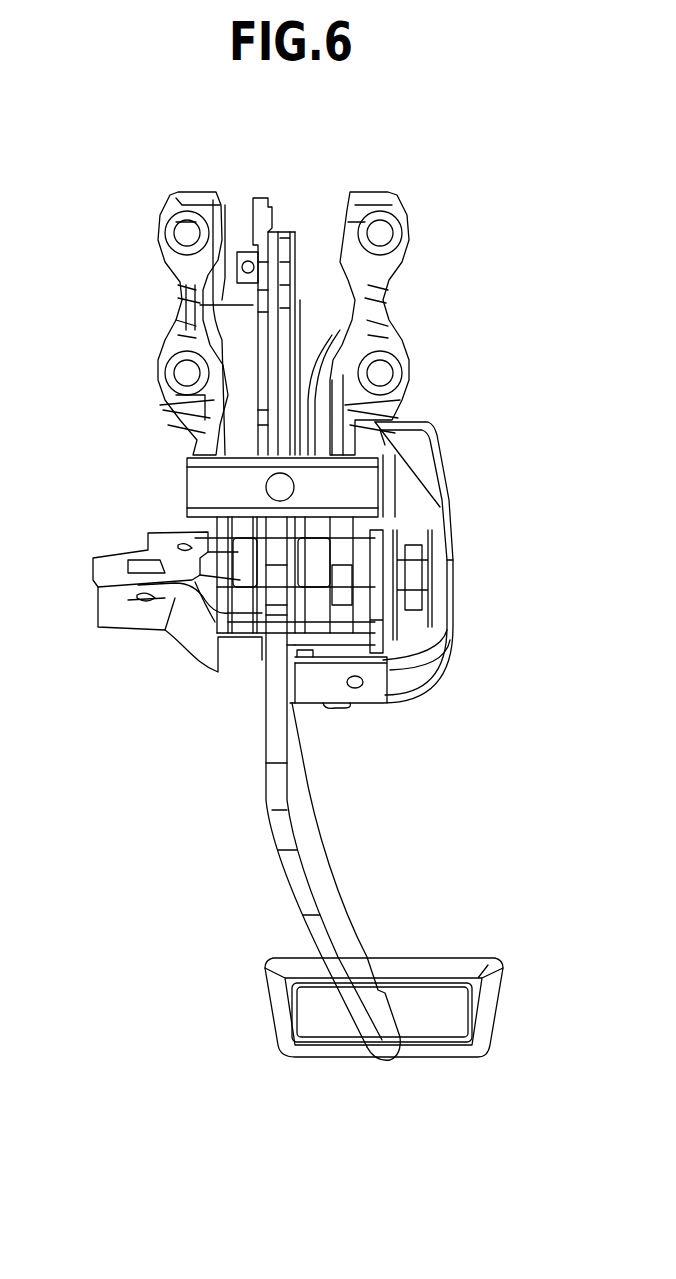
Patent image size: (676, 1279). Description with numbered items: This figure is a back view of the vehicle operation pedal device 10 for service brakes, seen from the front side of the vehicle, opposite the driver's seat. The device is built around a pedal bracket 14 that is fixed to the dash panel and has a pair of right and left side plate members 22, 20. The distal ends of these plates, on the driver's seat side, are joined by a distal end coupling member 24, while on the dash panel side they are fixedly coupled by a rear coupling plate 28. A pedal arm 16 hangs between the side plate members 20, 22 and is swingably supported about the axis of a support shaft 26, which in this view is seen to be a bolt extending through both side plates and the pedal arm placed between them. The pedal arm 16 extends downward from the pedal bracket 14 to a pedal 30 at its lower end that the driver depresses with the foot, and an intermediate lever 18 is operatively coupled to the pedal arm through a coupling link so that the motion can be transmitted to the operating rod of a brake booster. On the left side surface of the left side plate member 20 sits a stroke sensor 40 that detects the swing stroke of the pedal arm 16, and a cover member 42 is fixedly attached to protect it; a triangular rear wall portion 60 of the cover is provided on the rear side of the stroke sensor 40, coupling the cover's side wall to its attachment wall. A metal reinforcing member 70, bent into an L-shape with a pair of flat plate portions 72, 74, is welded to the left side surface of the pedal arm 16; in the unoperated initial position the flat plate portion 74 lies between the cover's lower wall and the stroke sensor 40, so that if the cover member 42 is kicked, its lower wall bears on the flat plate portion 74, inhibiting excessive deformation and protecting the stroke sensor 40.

The operation pedal device 10 is at (447, 179).
The pedal bracket 14 is at (158, 186).
The pedal arm 16 is at (325, 868).
The intermediate lever 18 is at (267, 222).
The side plate member 20 is at (323, 383).
The side plate member 22 is at (212, 415).
The distal end coupling member 24 is at (230, 317).
The support shaft 26 is at (195, 563).
The rear coupling plate 28 is at (203, 486).
The pedal 30 is at (330, 1022).
The stroke sensor 40 is at (437, 525).
The cover member 42 is at (478, 614).
The rear wall portion 60 is at (410, 448).
The reinforcing member 70 is at (350, 718).
The flat plate portion 72 is at (328, 688).
The flat plate portion 74 is at (380, 660).